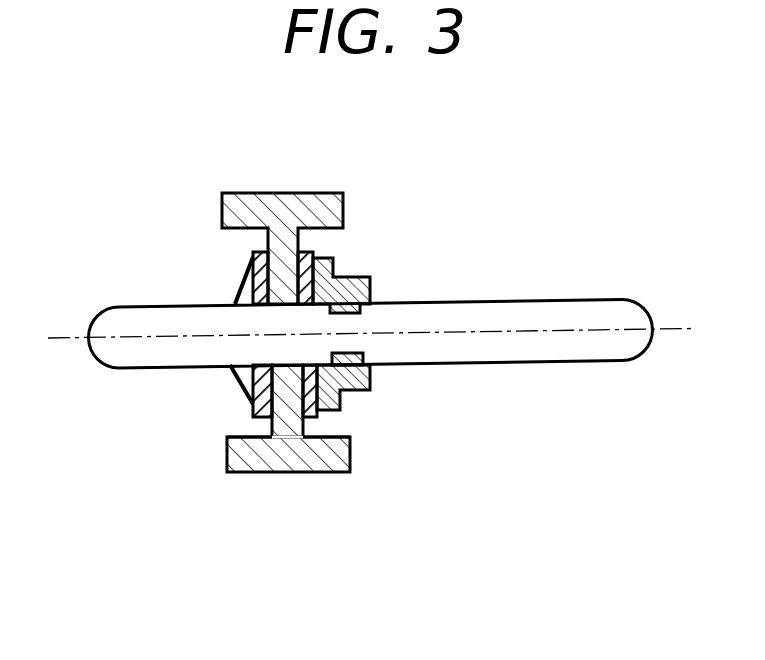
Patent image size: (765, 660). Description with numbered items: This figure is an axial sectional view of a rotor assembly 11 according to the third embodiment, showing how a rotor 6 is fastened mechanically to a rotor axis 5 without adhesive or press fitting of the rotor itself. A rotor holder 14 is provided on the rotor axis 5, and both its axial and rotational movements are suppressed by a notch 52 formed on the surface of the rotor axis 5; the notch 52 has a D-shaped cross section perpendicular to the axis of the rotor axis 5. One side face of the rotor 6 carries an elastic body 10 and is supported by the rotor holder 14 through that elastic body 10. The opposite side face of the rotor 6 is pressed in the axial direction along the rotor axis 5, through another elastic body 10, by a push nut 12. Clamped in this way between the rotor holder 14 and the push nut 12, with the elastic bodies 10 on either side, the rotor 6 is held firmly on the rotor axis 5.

The rotor assembly 11 is at (217, 167).
The rotor 6 is at (338, 192).
The elastic body 10 is at (308, 250).
The push nut 12 is at (253, 260).
The rotor holder 14 is at (340, 277).
The rotor axis 5 is at (588, 298).
The notch 52 is at (357, 353).